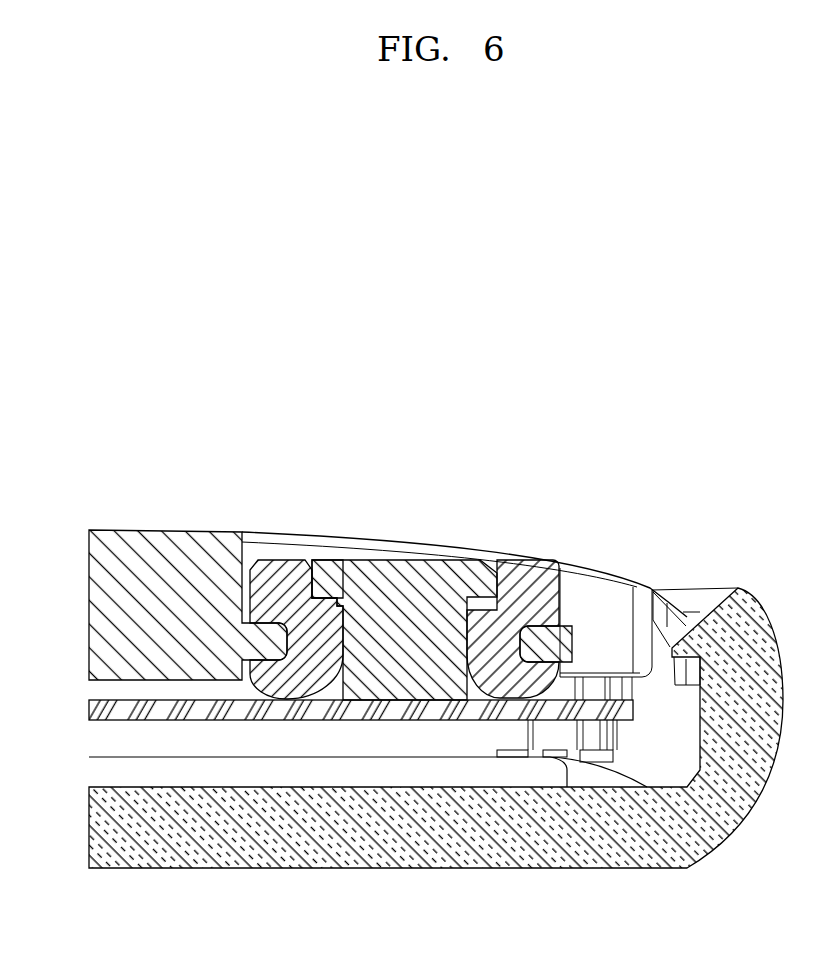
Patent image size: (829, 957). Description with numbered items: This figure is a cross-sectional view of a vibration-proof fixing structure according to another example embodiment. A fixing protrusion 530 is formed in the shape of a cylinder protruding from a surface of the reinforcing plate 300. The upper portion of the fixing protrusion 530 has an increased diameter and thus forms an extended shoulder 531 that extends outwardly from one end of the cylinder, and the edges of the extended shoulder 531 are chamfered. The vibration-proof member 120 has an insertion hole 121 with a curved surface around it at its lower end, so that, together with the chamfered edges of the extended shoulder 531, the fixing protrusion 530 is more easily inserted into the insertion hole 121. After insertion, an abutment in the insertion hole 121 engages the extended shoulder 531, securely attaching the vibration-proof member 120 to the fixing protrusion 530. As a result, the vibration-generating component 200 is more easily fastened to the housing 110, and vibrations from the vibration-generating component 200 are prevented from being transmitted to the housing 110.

The housing 110 is at (668, 852).
The vibration-proof member 120 is at (532, 578).
The insertion hole 121 is at (337, 692).
The vibration-generating component 200 is at (148, 568).
The reinforcing plate 300 is at (152, 708).
The fixing protrusion 530 is at (427, 590).
The extended shoulder 531 is at (328, 577).